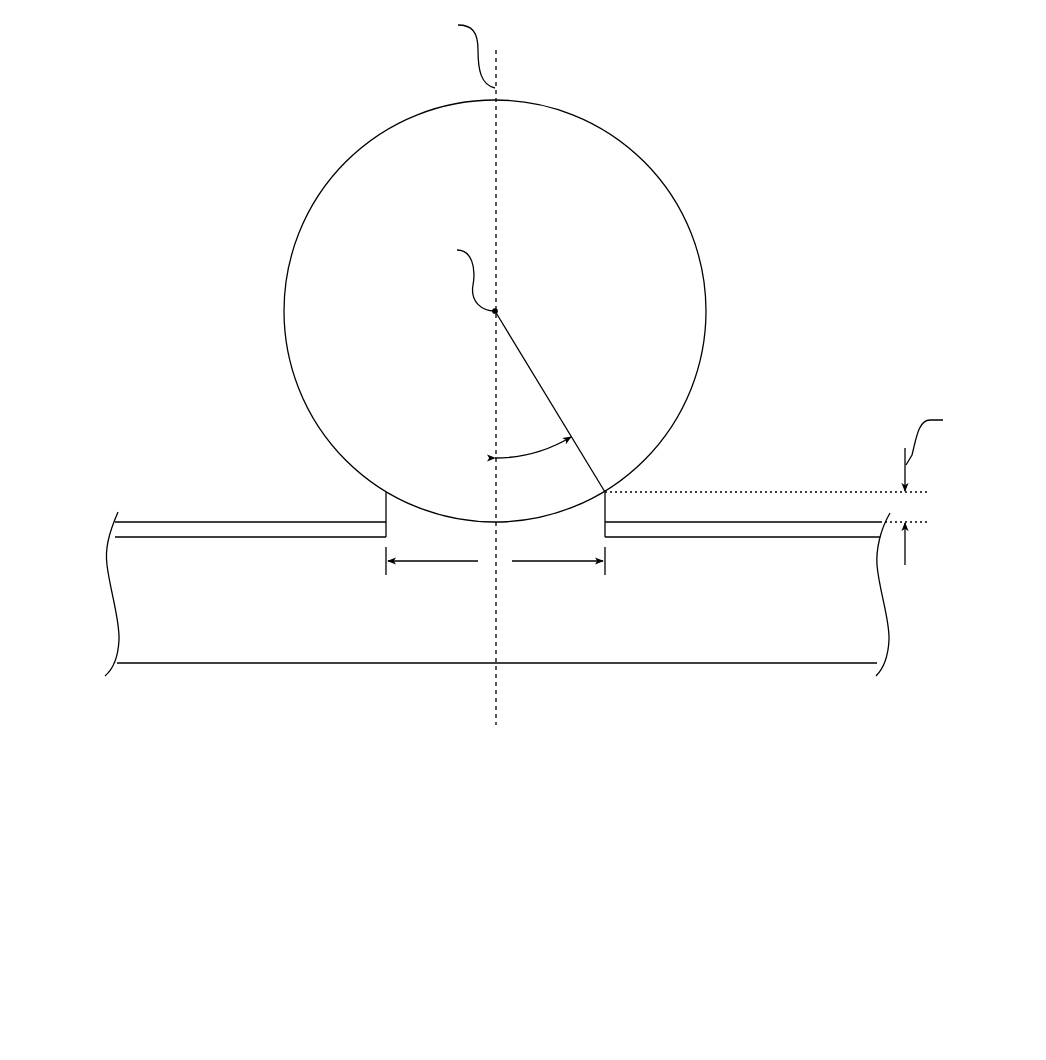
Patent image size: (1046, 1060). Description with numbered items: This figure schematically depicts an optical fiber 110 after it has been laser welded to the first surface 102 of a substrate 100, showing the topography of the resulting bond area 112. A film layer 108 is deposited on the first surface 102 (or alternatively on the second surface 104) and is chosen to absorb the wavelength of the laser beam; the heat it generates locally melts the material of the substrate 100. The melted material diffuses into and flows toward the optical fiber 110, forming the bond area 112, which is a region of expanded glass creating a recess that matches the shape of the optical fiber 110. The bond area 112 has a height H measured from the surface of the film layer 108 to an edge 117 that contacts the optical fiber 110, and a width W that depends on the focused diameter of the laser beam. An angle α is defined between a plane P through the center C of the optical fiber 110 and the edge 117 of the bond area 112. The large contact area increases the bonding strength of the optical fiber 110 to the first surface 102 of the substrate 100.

The substrate 100 is at (83, 420).
The first surface 102 is at (202, 536).
The second surface 104 is at (183, 665).
The film layer 108 is at (303, 522).
The optical fiber 110 is at (735, 231).
The bond area 112 is at (608, 514).
The edge of the bond area 117 is at (606, 507).